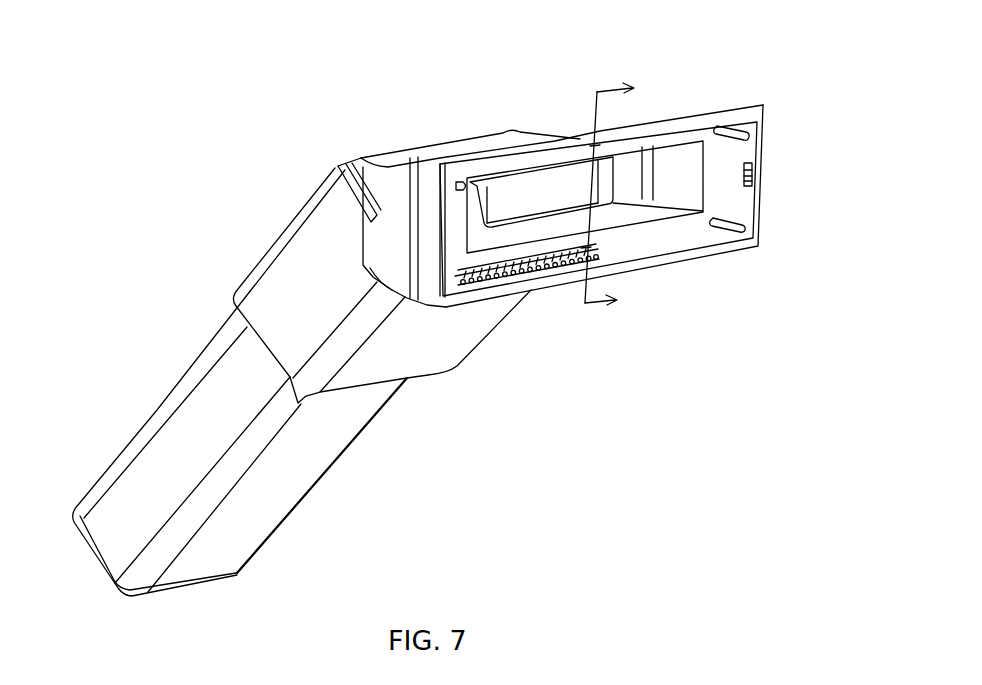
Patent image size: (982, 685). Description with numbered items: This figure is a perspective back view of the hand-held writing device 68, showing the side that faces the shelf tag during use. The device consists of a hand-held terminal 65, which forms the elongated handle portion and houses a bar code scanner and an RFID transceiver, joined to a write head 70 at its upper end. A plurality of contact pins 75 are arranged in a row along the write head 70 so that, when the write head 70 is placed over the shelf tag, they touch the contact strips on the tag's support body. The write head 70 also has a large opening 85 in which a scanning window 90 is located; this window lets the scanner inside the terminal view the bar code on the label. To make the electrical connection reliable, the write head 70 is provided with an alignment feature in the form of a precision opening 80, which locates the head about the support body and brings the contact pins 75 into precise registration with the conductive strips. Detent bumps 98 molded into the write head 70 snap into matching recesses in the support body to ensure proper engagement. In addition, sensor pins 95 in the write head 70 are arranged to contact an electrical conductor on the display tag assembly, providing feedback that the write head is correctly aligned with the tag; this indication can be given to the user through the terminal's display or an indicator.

The hand-held terminal 65 is at (326, 474).
The hand-held writing device 68 is at (461, 427).
The write head 70 is at (474, 353).
The contact pins 75 is at (543, 275).
The precision opening 80 is at (703, 243).
The opening 85 is at (638, 162).
The scanning window 90 is at (525, 187).
The sensor pins 95 is at (440, 163).
The detent bumps 98 is at (753, 172).